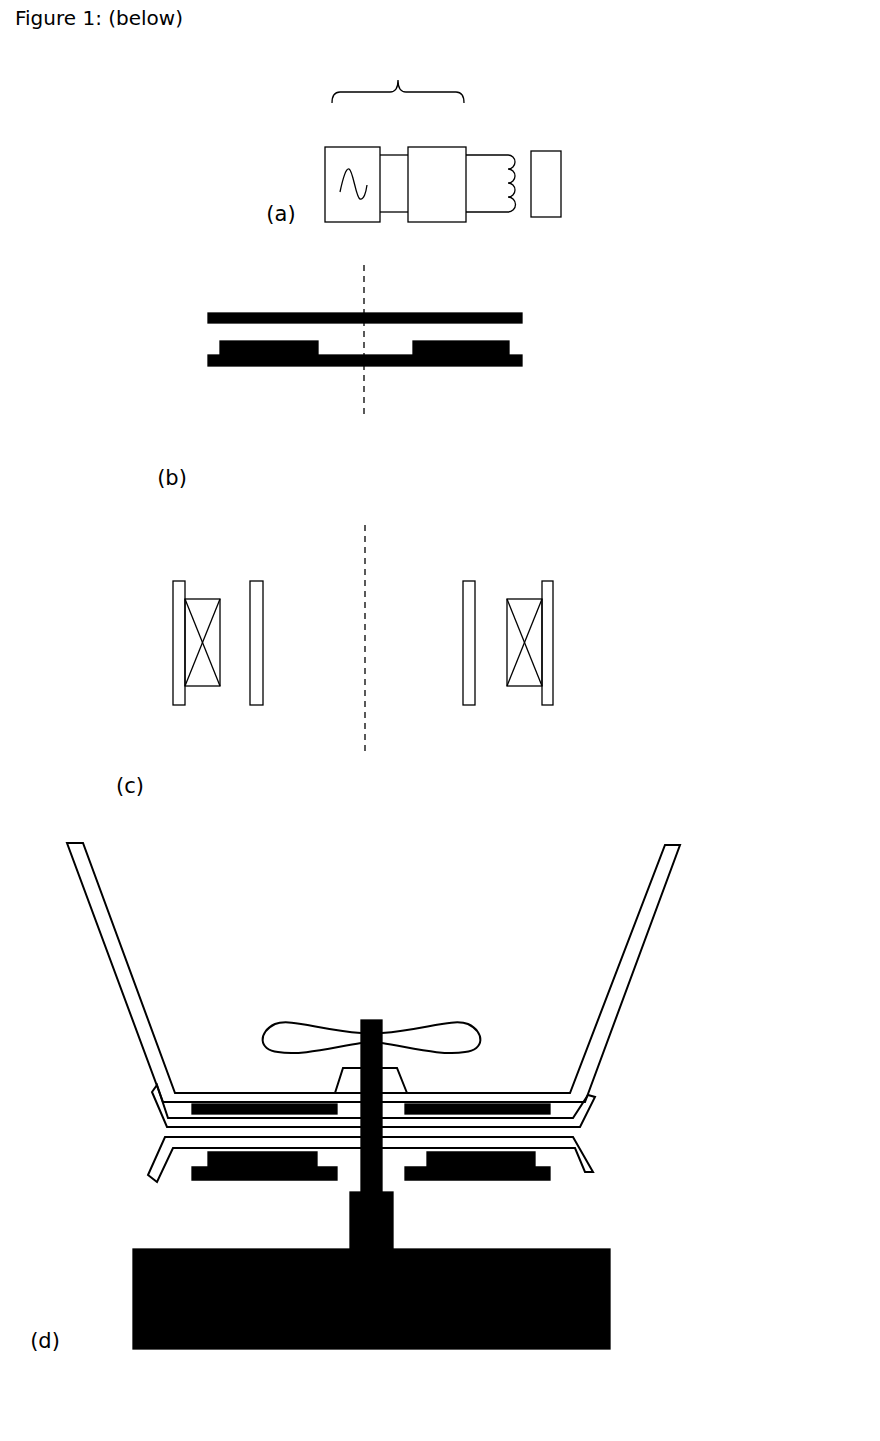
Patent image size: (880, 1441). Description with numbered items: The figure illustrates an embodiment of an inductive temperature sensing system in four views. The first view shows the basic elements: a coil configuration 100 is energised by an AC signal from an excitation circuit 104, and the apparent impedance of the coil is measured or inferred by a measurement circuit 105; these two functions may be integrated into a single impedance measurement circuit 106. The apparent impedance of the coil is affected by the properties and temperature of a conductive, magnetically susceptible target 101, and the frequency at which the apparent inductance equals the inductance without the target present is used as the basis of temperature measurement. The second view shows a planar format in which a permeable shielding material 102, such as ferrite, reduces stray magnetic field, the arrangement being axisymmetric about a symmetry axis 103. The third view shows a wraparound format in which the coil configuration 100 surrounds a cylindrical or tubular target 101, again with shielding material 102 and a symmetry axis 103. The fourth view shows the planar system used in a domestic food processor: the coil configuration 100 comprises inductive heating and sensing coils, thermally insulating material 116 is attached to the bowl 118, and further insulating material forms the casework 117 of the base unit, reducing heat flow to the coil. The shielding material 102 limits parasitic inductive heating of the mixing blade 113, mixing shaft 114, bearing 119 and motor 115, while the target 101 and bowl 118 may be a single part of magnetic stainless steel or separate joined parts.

The coil configuration 100 is at (508, 155).
The target 101 is at (546, 157).
The shielding material 102 is at (500, 366).
The symmetry axis 103 is at (364, 391).
The excitation circuit 104 is at (353, 158).
The measurement circuit 105 is at (440, 164).
The impedance measurement circuit 106 is at (398, 77).
The mixing blade 113 is at (462, 1038).
The mixing shaft 114 is at (374, 1020).
The motor 115 is at (610, 1288).
The thermally insulating material 116 is at (580, 1118).
The casework 117 is at (578, 1153).
The bowl 118 is at (662, 883).
The bearing 119 is at (393, 1076).